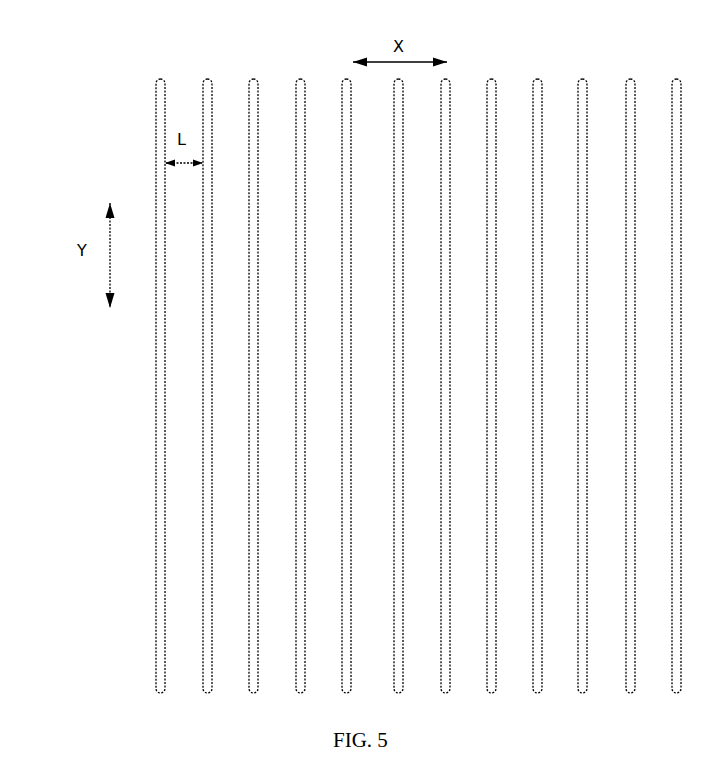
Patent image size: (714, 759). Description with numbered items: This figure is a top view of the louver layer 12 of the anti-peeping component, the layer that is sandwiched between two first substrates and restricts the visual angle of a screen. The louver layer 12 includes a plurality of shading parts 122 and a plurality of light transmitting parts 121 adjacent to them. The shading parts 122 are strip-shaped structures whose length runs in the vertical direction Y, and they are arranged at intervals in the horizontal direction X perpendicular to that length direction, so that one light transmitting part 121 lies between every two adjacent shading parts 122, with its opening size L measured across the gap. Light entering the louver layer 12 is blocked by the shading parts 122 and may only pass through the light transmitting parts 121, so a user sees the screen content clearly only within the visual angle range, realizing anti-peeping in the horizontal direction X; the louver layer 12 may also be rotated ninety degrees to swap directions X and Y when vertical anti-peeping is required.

The louver layer 12 is at (38, 102).
The light transmitting part 121 is at (188, 98).
The shading part 122 is at (162, 100).